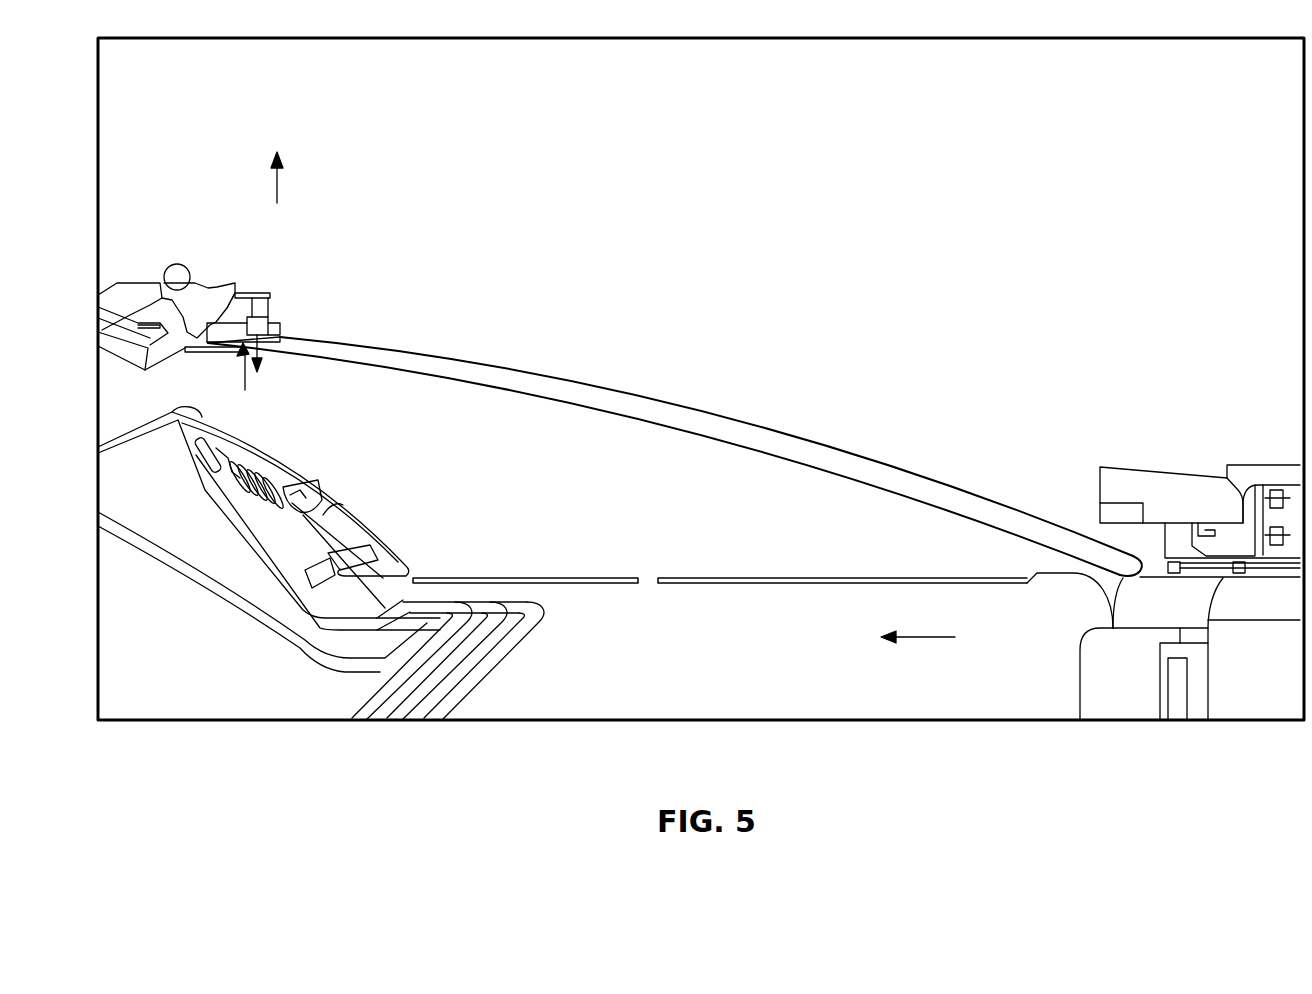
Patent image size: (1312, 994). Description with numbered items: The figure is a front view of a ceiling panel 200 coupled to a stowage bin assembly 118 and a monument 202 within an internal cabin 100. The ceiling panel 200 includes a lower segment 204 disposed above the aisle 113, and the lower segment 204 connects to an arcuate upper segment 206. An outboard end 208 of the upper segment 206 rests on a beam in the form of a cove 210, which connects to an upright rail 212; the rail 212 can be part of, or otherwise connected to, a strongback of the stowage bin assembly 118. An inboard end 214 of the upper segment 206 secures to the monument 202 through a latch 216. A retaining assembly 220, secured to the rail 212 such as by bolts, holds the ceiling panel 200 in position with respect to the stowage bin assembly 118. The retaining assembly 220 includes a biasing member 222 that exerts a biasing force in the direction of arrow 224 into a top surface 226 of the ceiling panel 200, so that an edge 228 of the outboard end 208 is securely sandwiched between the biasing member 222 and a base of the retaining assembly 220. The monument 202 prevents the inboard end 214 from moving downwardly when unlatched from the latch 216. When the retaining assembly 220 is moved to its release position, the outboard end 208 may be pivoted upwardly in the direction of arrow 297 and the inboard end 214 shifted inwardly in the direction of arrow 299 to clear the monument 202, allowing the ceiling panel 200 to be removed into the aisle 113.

The internal cabin 100 is at (533, 740).
The aisle 113 is at (795, 675).
The stowage bin assembly 118 is at (518, 658).
The ceiling panel 200 is at (680, 406).
The monument 202 is at (1073, 660).
The lower segment 204 is at (757, 586).
The upper segment 206 is at (718, 428).
The outboard end 208 is at (262, 315).
The cove 210 is at (217, 355).
The rail 212 is at (143, 283).
The inboard end 214 is at (1072, 580).
The latch 216 is at (1092, 535).
The retaining assembly 220 is at (240, 278).
The biasing member 222 is at (279, 335).
The arrow 224 is at (308, 333).
The top surface 226 is at (326, 336).
The edge 228 is at (245, 390).
The arrow 297 is at (280, 183).
The arrow 299 is at (920, 640).